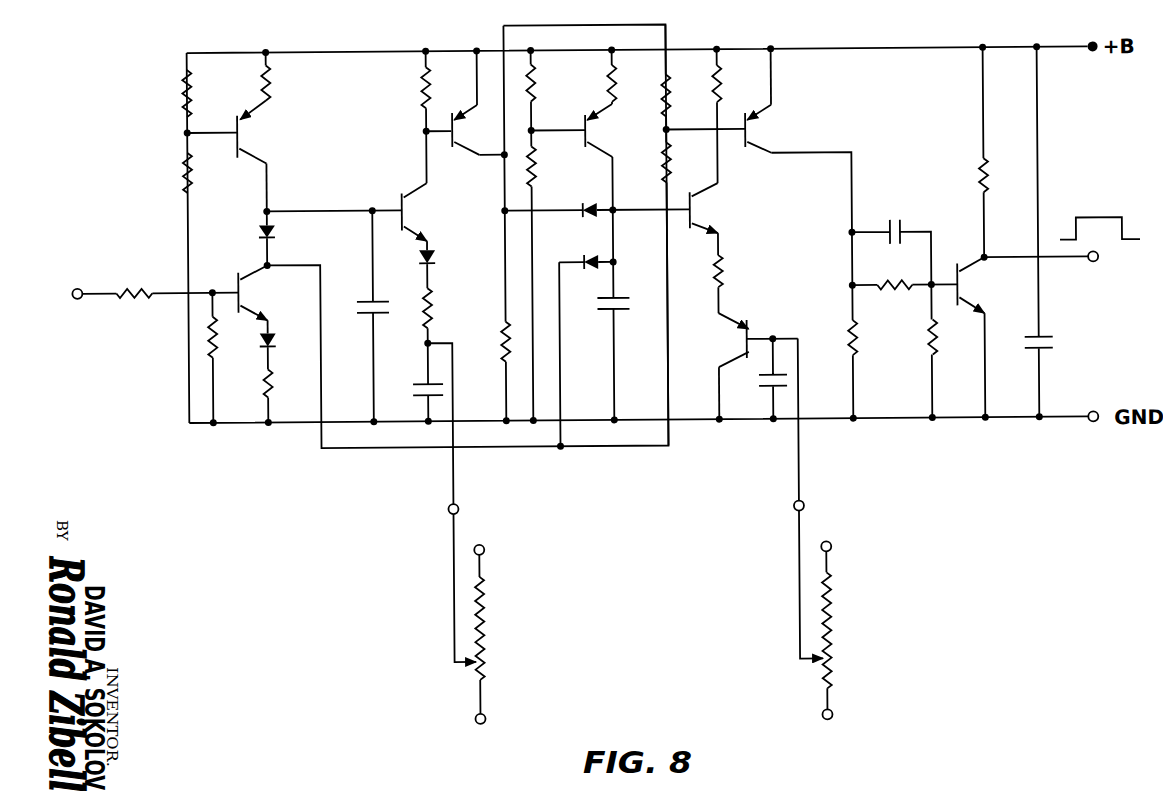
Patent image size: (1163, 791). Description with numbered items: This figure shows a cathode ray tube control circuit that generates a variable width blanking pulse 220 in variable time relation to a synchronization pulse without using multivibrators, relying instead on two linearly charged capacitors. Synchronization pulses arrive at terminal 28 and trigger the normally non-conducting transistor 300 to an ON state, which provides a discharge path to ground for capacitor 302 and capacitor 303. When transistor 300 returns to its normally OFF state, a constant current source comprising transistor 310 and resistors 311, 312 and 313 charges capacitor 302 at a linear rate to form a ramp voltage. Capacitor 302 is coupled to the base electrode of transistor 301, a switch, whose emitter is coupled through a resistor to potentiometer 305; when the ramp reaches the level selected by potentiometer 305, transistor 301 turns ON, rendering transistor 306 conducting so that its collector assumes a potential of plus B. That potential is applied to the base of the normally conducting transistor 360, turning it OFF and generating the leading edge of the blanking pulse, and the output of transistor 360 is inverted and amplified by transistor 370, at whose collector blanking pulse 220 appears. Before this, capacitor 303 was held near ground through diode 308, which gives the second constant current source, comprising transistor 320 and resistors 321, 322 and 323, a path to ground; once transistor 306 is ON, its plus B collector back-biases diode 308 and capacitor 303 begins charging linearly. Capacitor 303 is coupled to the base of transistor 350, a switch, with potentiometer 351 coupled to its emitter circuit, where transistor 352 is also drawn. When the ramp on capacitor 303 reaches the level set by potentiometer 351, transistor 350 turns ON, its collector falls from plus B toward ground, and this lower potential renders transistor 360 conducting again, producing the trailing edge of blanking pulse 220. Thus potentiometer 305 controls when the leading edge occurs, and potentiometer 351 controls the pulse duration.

The terminal 28 is at (72, 290).
The horizontal blanking pulse 220 is at (1101, 221).
The transistor 300 is at (243, 293).
The transistor 301 is at (405, 212).
The capacitor 302 is at (362, 300).
The capacitor 303 is at (616, 298).
The potentiometer 305 is at (485, 650).
The transistor 306 is at (455, 131).
The diode 308 is at (590, 218).
The transistor 310 is at (246, 143).
The resistor 311 is at (273, 81).
The resistor 312 is at (191, 89).
The resistor 313 is at (193, 180).
The transistor 320 is at (589, 132).
The resistor 321 is at (618, 85).
The resistor 322 is at (537, 87).
The resistor 323 is at (537, 174).
The transistor 350 is at (694, 215).
The potentiometer 351 is at (832, 650).
The transistor 352 is at (750, 327).
The transistor 360 is at (749, 133).
The transistor 370 is at (960, 289).